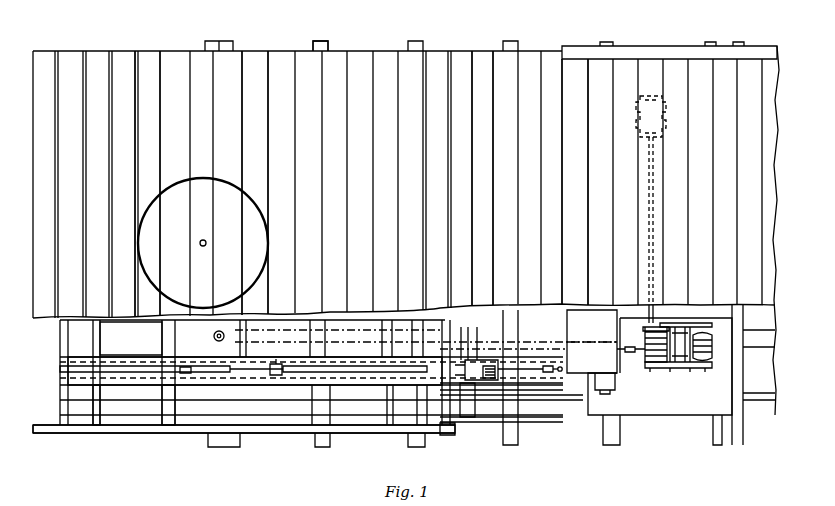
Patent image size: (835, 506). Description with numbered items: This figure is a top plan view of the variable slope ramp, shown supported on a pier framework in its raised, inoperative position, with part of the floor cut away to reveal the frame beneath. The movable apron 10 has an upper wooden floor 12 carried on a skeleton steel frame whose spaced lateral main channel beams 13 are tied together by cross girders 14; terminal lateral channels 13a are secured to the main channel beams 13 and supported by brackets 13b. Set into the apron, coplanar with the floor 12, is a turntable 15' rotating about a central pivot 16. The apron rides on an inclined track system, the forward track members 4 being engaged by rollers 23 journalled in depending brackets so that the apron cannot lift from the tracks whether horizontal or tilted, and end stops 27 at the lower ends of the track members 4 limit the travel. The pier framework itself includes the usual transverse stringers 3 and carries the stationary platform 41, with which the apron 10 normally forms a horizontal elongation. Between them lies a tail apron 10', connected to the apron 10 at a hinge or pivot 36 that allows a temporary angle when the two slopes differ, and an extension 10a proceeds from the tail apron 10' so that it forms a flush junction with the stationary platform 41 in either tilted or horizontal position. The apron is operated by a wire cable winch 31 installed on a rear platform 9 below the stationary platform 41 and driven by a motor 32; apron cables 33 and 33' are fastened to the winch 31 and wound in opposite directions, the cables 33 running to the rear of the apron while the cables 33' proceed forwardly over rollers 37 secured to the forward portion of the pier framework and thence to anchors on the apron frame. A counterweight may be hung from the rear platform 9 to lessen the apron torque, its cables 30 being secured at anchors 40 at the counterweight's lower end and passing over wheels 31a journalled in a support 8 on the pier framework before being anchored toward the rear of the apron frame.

The floor 12 is at (121, 56).
The apron 10 is at (267, 164).
The transverse stringers 3 is at (323, 45).
The tail apron 10' is at (485, 164).
The extension 10a is at (555, 50).
The stationary platform 41 is at (701, 60).
The wire cable winch 31 is at (660, 110).
The central pivot 16 is at (203, 240).
The turntable 15' is at (217, 243).
The cross girders 14 is at (97, 338).
The rollers 37 is at (213, 336).
The main channel beams 13 is at (148, 358).
The end stops 27 is at (186, 375).
The forward track members 4 is at (203, 373).
The rollers 23 is at (274, 377).
The brackets 13b is at (165, 412).
The terminal lateral channels 13a is at (149, 434).
The hinge or pivot 36 is at (447, 406).
The wheels 31a is at (490, 382).
The support 8 is at (481, 360).
The cables 30 is at (529, 368).
The anchors 40 is at (560, 373).
The apron cables 33 is at (606, 352).
The apron cables 33' is at (592, 327).
The rear platform 9 is at (676, 408).
The motor 32 is at (713, 350).